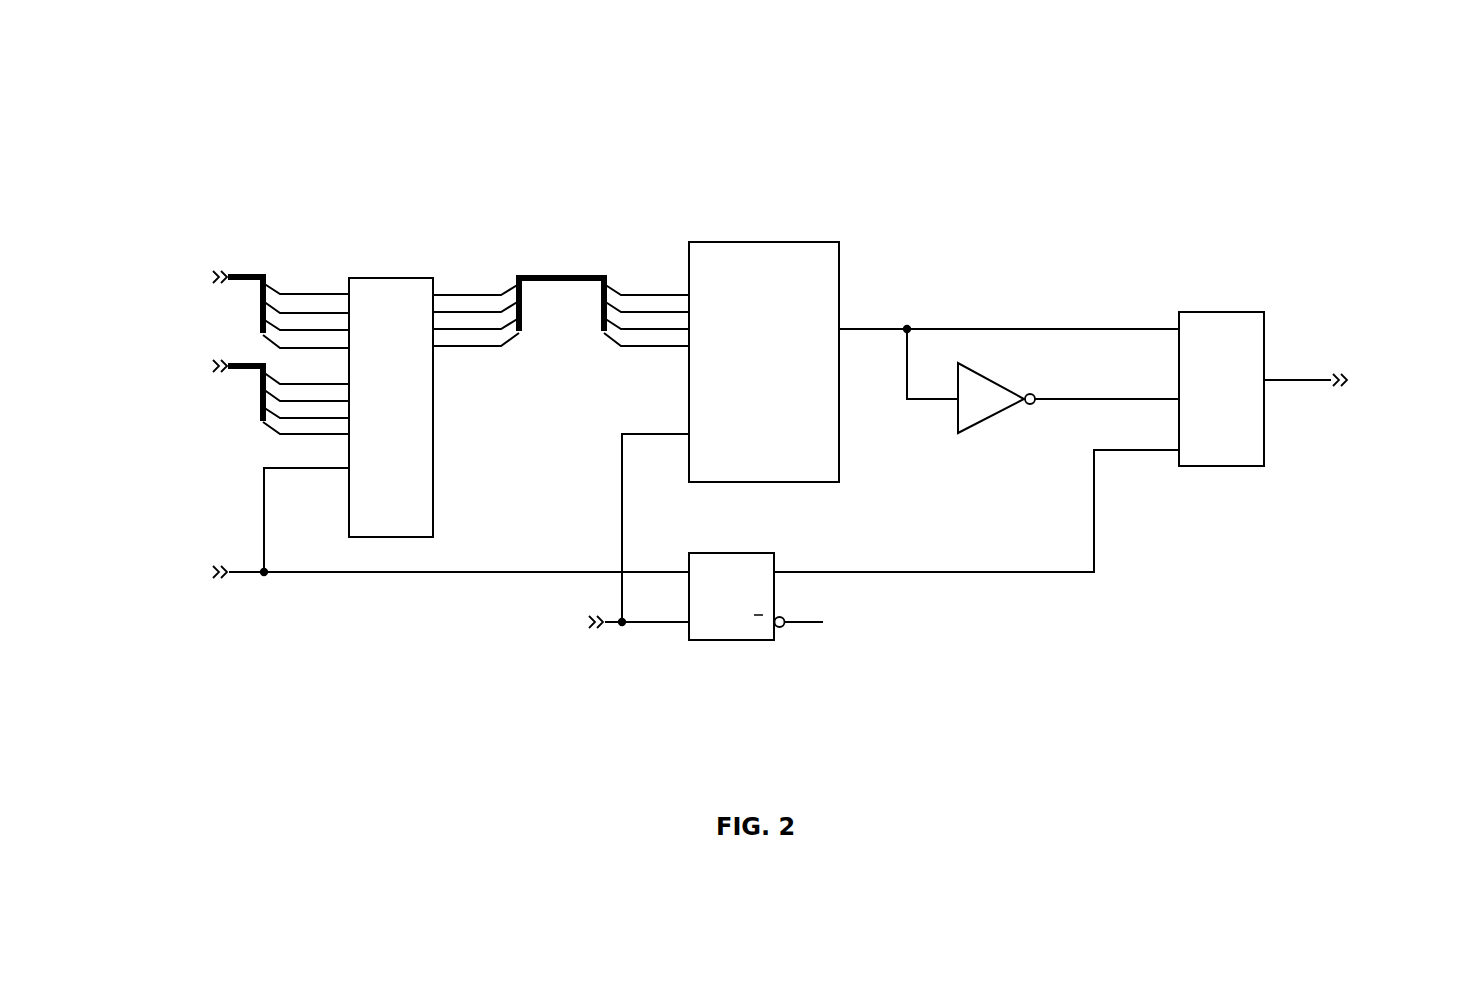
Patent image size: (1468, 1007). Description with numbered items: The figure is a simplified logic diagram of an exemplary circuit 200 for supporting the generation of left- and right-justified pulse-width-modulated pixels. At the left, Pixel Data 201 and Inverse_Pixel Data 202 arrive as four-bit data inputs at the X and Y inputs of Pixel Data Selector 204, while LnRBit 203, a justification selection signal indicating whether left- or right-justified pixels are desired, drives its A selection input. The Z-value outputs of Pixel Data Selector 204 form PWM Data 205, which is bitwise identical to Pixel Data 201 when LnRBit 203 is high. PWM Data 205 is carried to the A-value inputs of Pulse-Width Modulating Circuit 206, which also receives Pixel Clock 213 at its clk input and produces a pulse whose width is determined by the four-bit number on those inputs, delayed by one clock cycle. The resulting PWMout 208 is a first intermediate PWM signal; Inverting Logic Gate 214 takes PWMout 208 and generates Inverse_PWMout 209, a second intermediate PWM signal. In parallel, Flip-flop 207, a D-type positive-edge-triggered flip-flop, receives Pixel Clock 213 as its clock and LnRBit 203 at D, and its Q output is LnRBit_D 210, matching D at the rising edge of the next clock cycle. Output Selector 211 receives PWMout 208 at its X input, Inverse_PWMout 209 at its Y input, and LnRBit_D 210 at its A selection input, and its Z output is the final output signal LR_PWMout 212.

The exemplary circuit 200 is at (767, 351).
The Pixel Data 201 is at (223, 298).
The Inverse_Pixel Data 202 is at (223, 384).
The LnRBit 203 is at (415, 525).
The Pixel Data Selector 204 is at (391, 392).
The PWM Data 205 is at (561, 285).
The Pulse-Width Modulating Circuit 206 is at (764, 352).
The Flip-flop 207 is at (731, 585).
The PWMOut 208 is at (1009, 346).
The Inverse_PWMout 209 is at (1107, 379).
The LnRBit_D 210 is at (799, 610).
The Output Selector 211 is at (1221, 374).
The LR_PWMout 212 is at (1350, 364).
The Pixel Clock 213 is at (608, 546).
The Inverting Logic Gate 214 is at (996, 406).